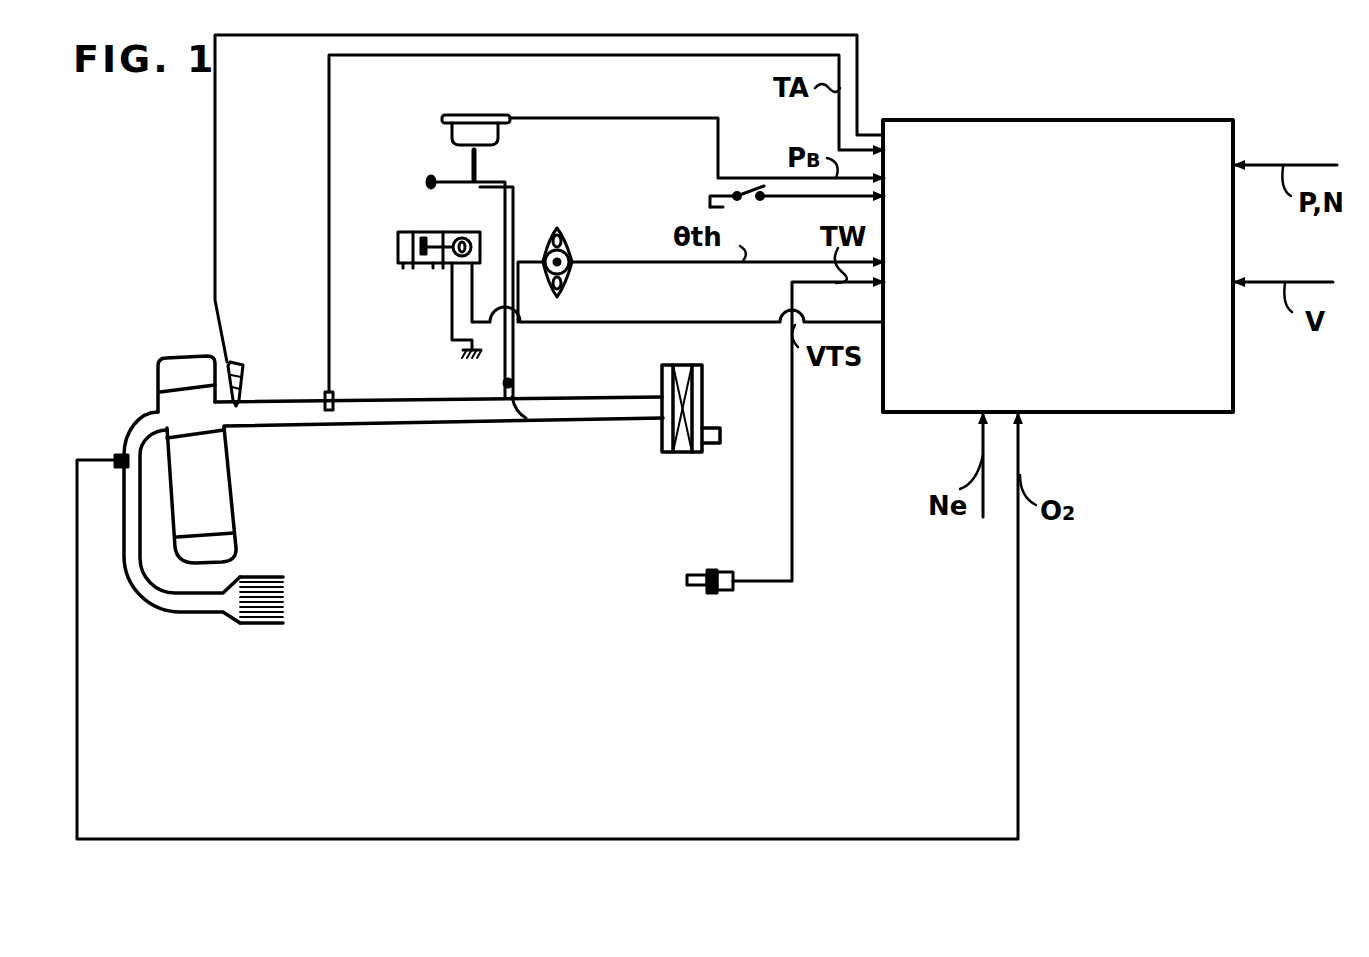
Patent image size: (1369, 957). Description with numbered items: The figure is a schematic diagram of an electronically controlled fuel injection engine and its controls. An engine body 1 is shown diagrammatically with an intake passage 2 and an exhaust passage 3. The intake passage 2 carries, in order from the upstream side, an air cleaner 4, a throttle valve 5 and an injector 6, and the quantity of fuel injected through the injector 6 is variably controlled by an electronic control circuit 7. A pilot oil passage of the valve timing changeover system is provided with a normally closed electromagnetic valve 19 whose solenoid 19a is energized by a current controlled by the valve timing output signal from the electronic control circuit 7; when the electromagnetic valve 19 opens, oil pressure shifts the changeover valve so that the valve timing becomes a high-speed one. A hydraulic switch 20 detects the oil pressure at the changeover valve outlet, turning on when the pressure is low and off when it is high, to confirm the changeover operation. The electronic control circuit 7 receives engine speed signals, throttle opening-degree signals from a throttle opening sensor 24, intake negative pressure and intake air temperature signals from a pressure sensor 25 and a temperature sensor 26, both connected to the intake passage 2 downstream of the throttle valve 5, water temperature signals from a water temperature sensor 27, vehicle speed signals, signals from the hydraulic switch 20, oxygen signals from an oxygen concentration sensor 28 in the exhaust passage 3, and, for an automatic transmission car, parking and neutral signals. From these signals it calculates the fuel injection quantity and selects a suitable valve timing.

The engine body 1 is at (157, 355).
The intake passage 2 is at (437, 420).
The exhaust passage 3 is at (183, 614).
The air cleaner 4 is at (662, 458).
The throttle valve 5 is at (524, 421).
The injector 6 is at (246, 388).
The electronic control circuit 7 is at (1070, 289).
The electromagnetic valve 19 is at (403, 232).
The solenoid 19a is at (480, 235).
The hydraulic switch 20 is at (750, 186).
The throttle opening sensor 24 is at (565, 250).
The pressure sensor 25 is at (485, 115).
The temperature sensor 26 is at (334, 392).
The water temperature sensor 27 is at (693, 574).
The oxygen concentration sensor 28 is at (117, 453).